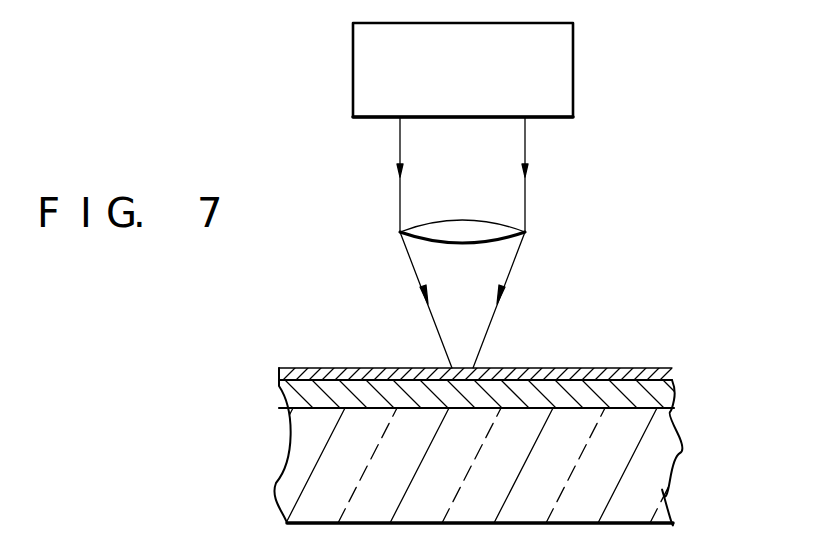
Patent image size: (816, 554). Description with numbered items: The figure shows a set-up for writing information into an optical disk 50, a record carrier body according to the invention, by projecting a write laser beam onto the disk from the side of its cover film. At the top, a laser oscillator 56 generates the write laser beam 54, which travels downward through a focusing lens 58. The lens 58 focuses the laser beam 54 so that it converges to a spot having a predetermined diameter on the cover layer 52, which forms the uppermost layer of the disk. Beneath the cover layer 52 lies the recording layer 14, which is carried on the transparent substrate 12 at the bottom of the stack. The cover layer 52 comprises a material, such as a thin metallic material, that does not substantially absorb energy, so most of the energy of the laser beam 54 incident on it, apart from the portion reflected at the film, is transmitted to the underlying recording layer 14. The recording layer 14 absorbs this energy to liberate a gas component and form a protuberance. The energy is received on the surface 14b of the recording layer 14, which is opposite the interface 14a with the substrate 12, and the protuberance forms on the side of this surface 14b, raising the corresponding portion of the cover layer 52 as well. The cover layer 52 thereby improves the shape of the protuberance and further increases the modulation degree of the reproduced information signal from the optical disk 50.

The laser oscillator 56 is at (558, 98).
The write laser beam 54 is at (527, 205).
The focusing lens 58 is at (495, 228).
The cover layer 52 is at (658, 374).
The surface of the recording layer 14b is at (673, 376).
The recording layer 14 is at (670, 395).
The interface 14a is at (675, 417).
The optical disk 50 is at (680, 465).
The transparent substrate 12 is at (672, 500).